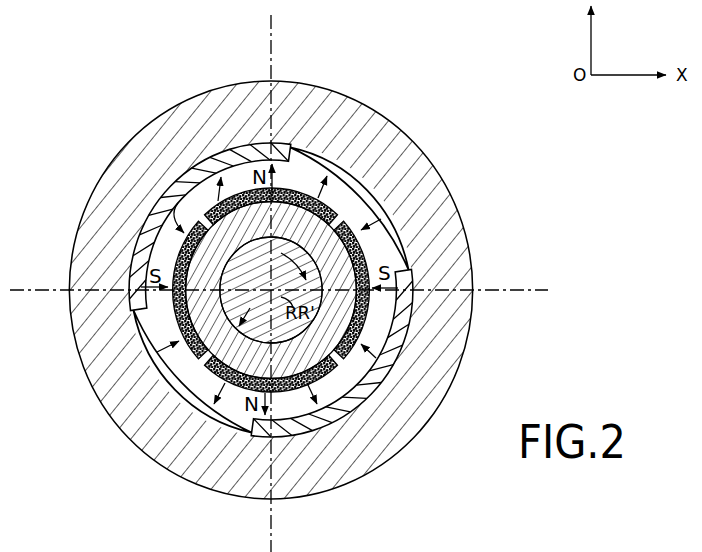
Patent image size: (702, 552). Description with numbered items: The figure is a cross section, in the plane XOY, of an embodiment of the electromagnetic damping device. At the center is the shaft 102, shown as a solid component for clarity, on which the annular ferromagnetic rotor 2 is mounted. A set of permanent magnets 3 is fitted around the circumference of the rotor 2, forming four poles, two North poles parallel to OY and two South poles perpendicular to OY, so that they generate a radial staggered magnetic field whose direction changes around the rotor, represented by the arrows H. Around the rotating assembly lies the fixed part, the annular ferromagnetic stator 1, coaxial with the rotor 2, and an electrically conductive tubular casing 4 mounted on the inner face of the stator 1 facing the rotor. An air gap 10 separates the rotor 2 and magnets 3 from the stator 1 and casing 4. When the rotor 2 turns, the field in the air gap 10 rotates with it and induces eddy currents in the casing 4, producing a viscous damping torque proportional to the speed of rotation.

The stator 1 is at (345, 463).
The rotor 2 is at (208, 303).
The permanent magnets 3 is at (366, 318).
The tubular casing 4 is at (353, 402).
The air gap 10 is at (382, 254).
The shaft 102 is at (195, 378).
The magnetic field arrows H is at (218, 201).